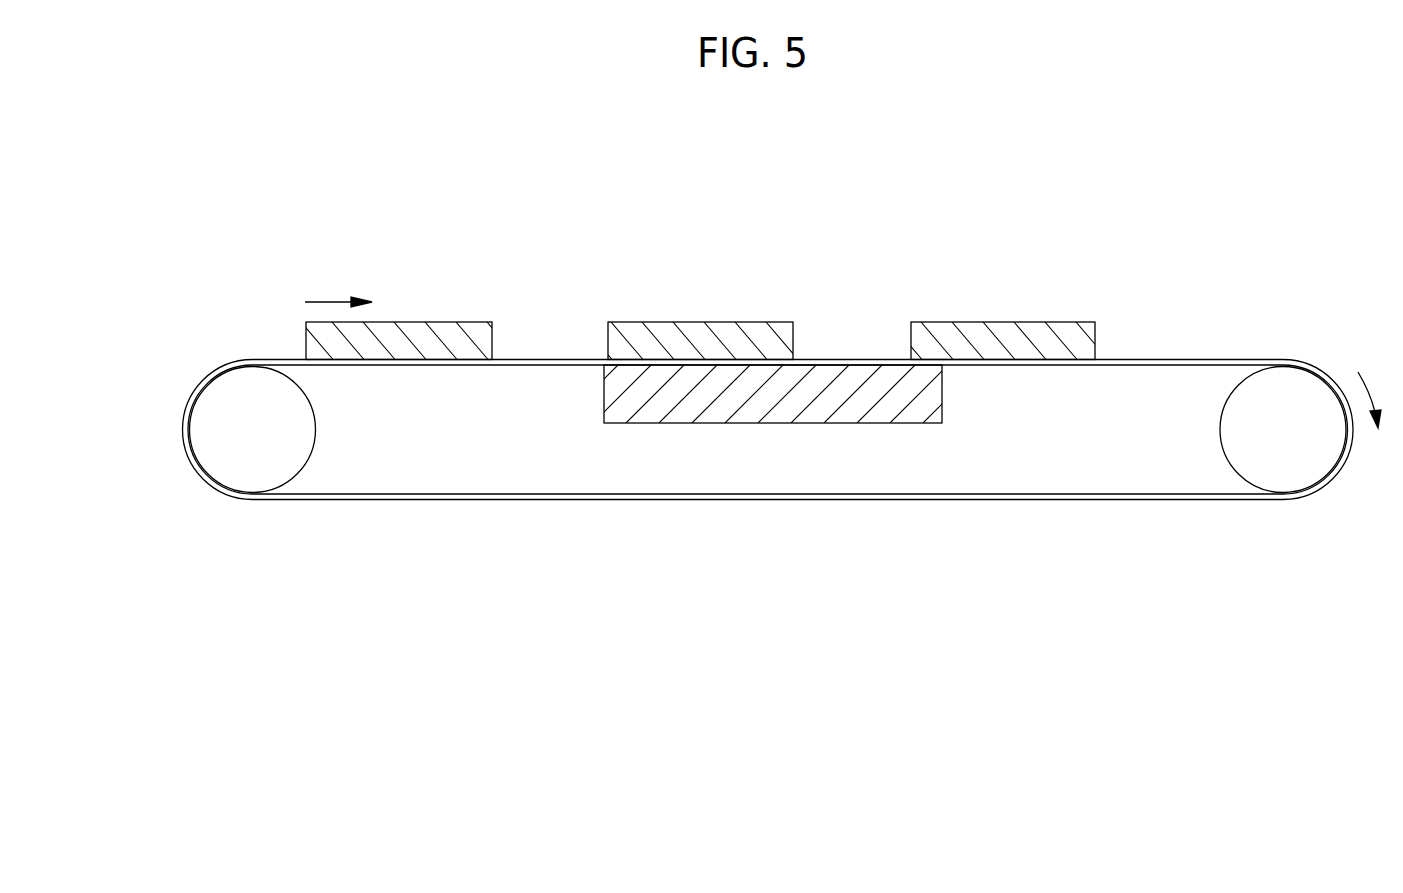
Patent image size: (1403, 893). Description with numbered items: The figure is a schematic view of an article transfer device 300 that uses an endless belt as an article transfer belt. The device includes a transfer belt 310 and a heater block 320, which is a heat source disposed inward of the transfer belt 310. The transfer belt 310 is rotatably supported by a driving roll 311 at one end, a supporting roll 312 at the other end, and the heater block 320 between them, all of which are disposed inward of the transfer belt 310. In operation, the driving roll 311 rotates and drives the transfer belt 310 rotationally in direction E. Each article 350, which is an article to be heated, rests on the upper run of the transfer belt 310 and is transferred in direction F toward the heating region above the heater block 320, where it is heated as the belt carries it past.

The article transfer device 300 is at (771, 201).
The transfer belt 310 is at (1065, 500).
The driving roll 311 is at (1307, 386).
The supporting roll 312 is at (207, 413).
The heater block 320 is at (827, 423).
The article 350 is at (306, 332).